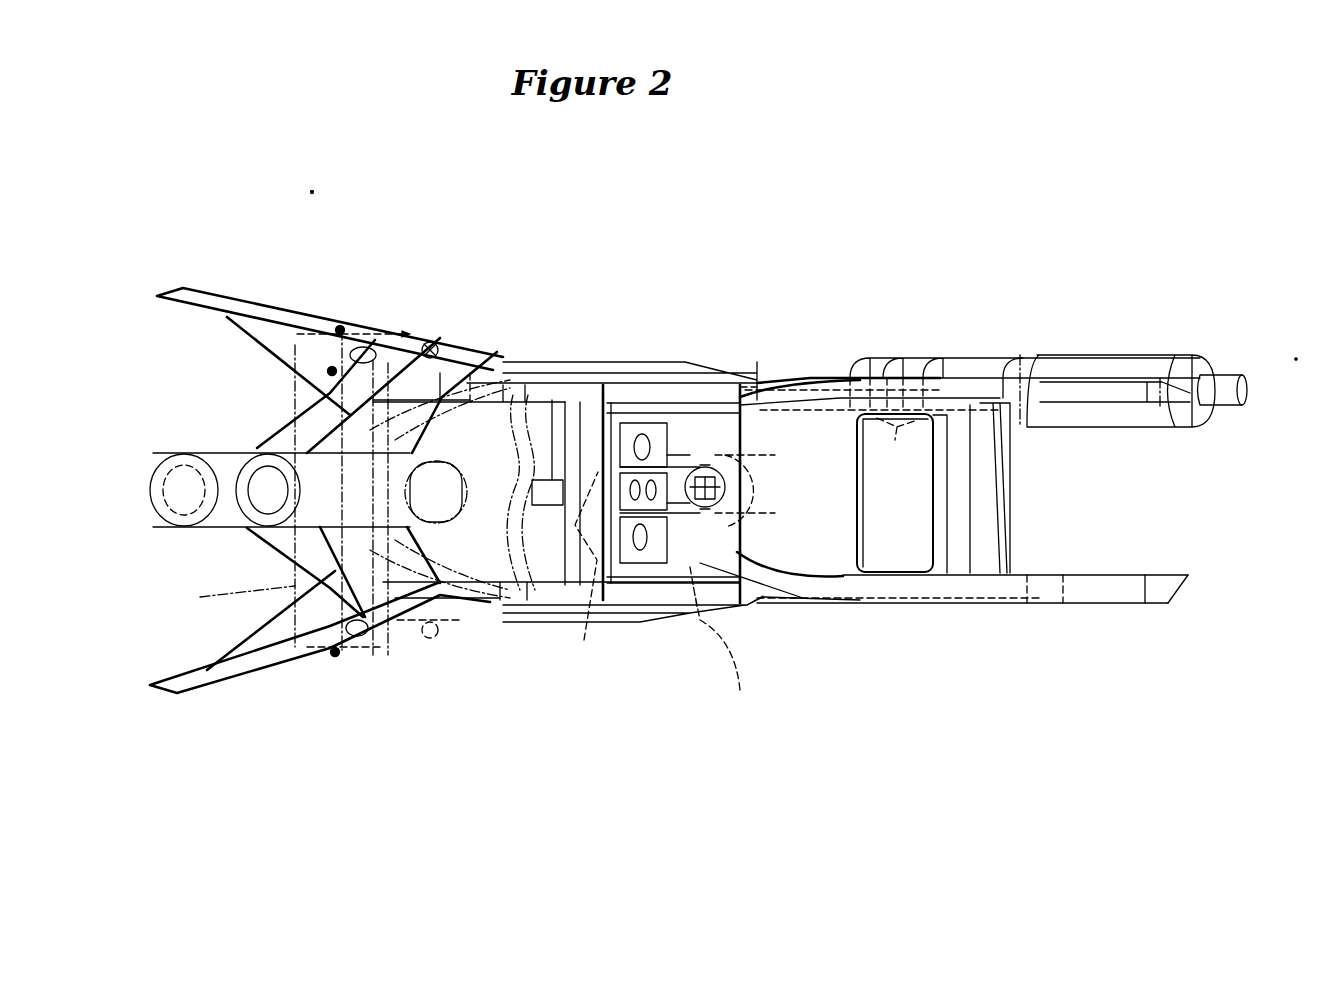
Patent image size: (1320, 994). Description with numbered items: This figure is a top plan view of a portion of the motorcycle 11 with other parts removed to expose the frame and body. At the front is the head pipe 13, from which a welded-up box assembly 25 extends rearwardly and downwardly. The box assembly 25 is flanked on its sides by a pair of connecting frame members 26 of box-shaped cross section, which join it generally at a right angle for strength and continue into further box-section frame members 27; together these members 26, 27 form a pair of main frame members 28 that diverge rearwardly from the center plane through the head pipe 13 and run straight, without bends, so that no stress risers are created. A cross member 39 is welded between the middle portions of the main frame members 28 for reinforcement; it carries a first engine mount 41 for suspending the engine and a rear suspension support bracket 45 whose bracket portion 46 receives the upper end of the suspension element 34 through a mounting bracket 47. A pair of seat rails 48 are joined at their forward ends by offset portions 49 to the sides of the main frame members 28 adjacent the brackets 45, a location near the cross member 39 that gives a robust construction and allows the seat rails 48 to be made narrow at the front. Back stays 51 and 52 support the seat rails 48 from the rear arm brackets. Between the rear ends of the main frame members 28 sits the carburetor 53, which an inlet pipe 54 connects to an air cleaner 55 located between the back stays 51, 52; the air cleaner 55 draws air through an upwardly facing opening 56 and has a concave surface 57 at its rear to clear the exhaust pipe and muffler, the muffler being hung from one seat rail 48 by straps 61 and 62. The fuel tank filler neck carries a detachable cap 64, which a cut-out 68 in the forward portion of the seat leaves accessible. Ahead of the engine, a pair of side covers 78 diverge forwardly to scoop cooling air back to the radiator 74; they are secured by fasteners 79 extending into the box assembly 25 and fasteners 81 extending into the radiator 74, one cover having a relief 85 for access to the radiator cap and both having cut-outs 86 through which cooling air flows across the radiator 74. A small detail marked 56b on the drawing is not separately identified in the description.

The motorcycle 11 is at (240, 392).
The head pipe 13 is at (205, 522).
The box assembly 25 is at (330, 371).
The connecting frame members 26 is at (250, 445).
The frame members 27 is at (552, 385).
The main frame members 28 is at (527, 333).
The suspension element 34 is at (743, 533).
The cross member 39 is at (580, 400).
The first engine mount 41 is at (457, 468).
The rear suspension support bracket 45 is at (633, 403).
The bracket portion 46 is at (693, 403).
The mounting bracket 47 is at (758, 520).
The seat rails 48 is at (860, 380).
The offset portions 49 is at (727, 403).
The back stay 51 is at (930, 380).
The back stay 52 is at (1043, 600).
The carburetor 53 is at (583, 570).
The inlet pipe 54 is at (723, 643).
The air cleaner 55 is at (843, 567).
The opening 56 is at (1000, 520).
The joint 56b is at (427, 340).
The concave surface 57 is at (847, 380).
The strap 61 is at (896, 430).
The strap 62 is at (1027, 360).
The cap 64 is at (462, 505).
The cut-out 68 is at (472, 467).
The radiator 74 is at (200, 597).
The side covers 78 is at (230, 302).
The fasteners 79 is at (320, 470).
The fasteners 81 is at (338, 327).
The relief 85 is at (366, 638).
The cut-outs 86 is at (368, 340).